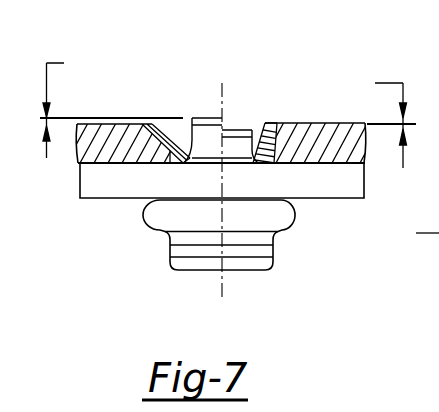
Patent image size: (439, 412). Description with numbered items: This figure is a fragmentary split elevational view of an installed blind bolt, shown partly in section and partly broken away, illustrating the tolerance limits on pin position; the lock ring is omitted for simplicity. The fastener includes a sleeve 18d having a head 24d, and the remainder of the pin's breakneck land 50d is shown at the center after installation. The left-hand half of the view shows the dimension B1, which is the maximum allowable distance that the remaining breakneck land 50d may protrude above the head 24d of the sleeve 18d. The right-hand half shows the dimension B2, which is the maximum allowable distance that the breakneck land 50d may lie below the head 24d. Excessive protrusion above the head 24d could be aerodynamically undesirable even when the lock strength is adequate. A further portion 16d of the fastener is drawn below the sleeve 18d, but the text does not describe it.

The head 24d is at (155, 123).
The breakneck land 50d is at (198, 118).
The sleeve 18d is at (295, 210).
The hub 16d is at (270, 262).
The dimension B1 is at (70, 106).
The dimension B2 is at (379, 116).